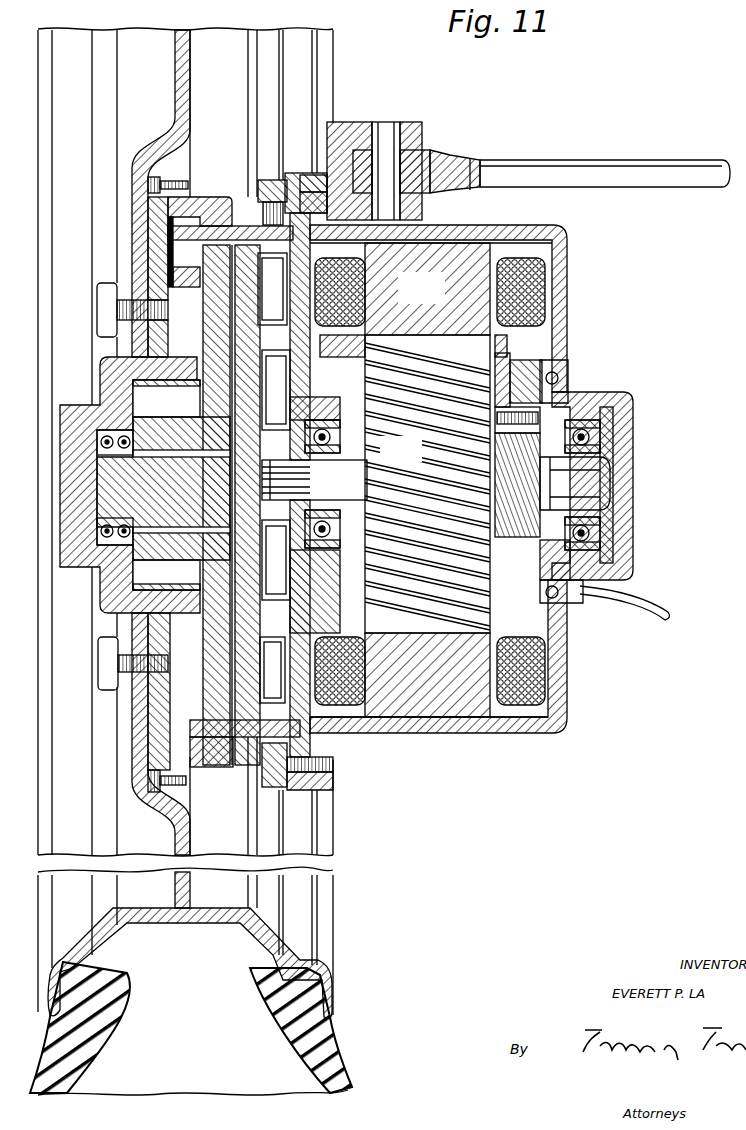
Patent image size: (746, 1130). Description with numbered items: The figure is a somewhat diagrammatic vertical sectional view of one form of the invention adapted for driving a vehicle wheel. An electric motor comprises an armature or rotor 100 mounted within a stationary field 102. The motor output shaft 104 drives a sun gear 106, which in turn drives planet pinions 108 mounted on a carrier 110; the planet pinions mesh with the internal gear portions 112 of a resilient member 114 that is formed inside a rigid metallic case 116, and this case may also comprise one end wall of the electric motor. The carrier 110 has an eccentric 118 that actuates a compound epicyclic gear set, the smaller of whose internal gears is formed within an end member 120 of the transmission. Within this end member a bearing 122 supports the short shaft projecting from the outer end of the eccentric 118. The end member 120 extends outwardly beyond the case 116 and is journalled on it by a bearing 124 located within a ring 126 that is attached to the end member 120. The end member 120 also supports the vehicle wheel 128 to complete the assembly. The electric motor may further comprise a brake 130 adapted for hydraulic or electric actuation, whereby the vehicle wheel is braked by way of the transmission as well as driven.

The armature or rotor 100 is at (414, 459).
The stationary field 102 is at (437, 298).
The motor output shaft 104 is at (348, 481).
The sun gear 106 is at (327, 405).
The planet pinions 108 is at (280, 375).
The carrier 110 is at (247, 335).
The internal gear portions 112 is at (252, 232).
The resilient member 114 is at (257, 233).
The rigid metallic case 116 is at (199, 197).
The eccentric 118 is at (133, 543).
The end member 120 is at (110, 372).
The bearing 122 is at (95, 440).
The bearing 124 is at (150, 215).
The ring 126 is at (168, 474).
The vehicle wheel 128 is at (177, 95).
The brake 130 is at (568, 360).